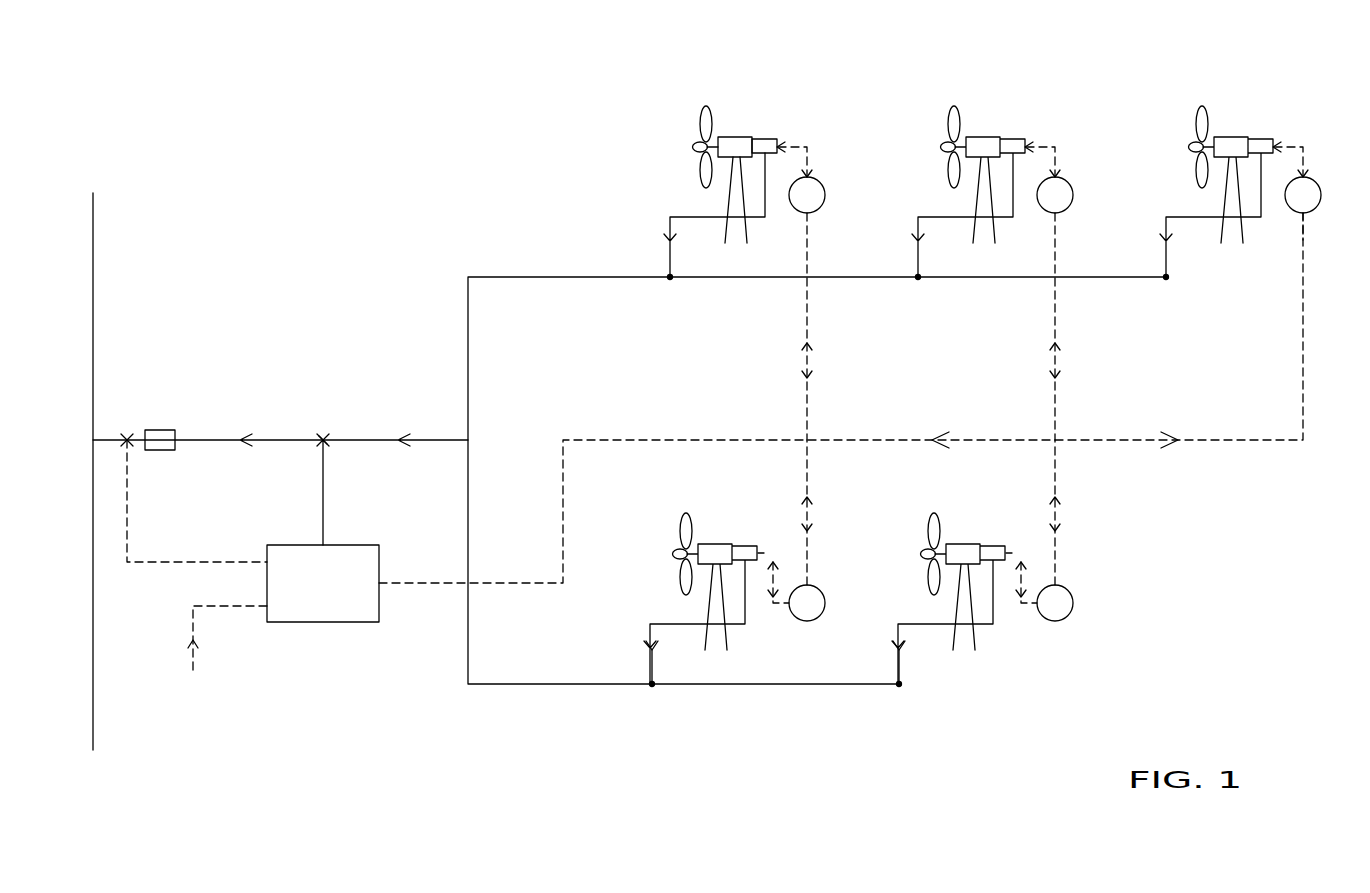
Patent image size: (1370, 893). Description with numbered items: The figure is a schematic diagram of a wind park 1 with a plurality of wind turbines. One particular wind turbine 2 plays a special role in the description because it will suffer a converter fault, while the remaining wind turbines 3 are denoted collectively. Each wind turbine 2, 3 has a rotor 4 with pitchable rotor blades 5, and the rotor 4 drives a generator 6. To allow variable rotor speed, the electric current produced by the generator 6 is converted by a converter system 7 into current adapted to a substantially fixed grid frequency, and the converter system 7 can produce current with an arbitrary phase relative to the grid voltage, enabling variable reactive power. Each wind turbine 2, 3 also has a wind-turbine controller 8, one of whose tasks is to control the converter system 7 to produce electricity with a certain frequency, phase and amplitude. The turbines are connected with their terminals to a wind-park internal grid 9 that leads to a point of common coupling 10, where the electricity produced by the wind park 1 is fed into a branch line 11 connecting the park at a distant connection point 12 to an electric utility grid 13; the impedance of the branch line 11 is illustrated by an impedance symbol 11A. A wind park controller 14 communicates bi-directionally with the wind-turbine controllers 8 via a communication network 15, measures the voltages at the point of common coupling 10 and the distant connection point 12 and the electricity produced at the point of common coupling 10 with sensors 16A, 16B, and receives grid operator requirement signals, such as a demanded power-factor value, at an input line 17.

The wind park 1 is at (508, 152).
The wind turbine 2 is at (755, 241).
The wind turbines 3 is at (733, 137).
The rotor 4 is at (700, 165).
The pitchable rotor blades 5 is at (700, 125).
The generator 6 is at (733, 137).
The converter system 7 is at (767, 139).
The wind-turbine controller 8 is at (825, 192).
The wind-park internal grid 9 is at (700, 278).
The point of common coupling (PCC) 10 is at (323, 435).
The branch line 11 is at (213, 438).
The impedance symbol 11A is at (160, 430).
The distant connection point 12 is at (95, 438).
The electric utility grid 13 is at (95, 272).
The wind park controller 14 is at (325, 625).
The communication network 15 is at (668, 438).
The sensor 16A is at (326, 446).
The sensor 16B is at (130, 446).
The input line 17 is at (222, 607).